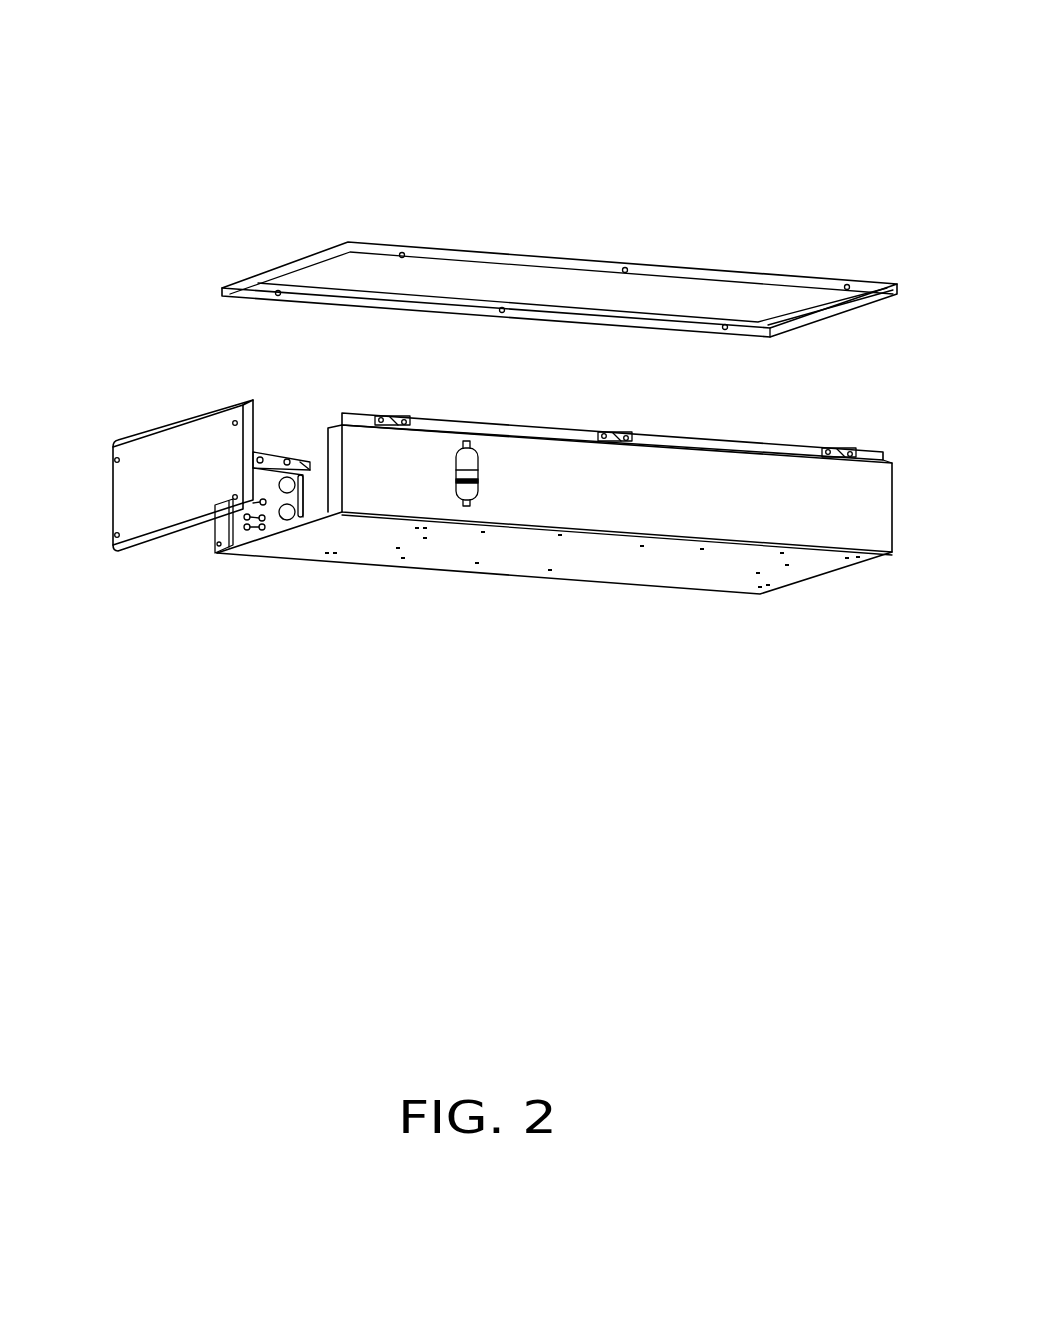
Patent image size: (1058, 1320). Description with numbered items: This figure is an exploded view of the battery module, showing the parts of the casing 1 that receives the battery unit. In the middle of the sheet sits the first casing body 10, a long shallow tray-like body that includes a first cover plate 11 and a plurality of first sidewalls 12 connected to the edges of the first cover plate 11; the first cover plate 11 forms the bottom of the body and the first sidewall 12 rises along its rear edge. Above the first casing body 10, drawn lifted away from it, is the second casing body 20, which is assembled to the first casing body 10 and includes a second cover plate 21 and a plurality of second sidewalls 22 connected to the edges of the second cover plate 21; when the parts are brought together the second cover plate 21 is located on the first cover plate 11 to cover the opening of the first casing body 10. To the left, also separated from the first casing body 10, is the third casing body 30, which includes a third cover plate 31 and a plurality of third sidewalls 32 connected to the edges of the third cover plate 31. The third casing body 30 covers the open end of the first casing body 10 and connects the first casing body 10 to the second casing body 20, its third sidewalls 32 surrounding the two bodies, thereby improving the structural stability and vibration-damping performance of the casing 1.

The casing 1 is at (405, 145).
The first casing body 10 is at (886, 491).
The first cover plate 11 is at (517, 558).
The first sidewalls 12 is at (848, 532).
The second casing body 20 is at (822, 270).
The second cover plate 21 is at (562, 290).
The second sidewalls 22 is at (668, 265).
The third casing body 30 is at (151, 420).
The third cover plate 31 is at (150, 495).
The third sidewalls 32 is at (158, 538).